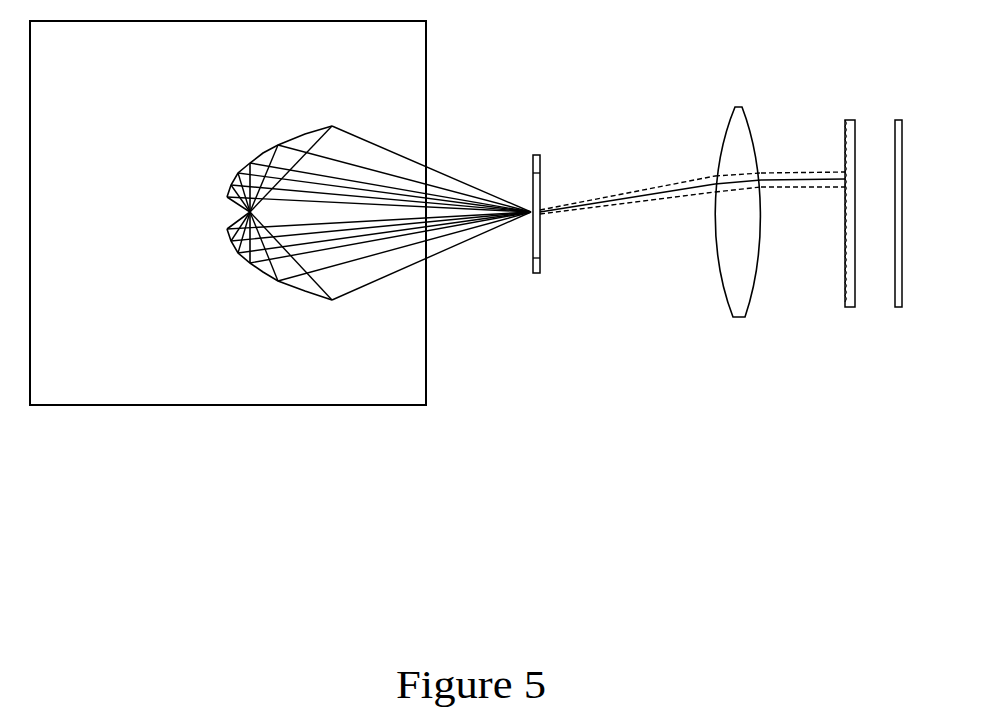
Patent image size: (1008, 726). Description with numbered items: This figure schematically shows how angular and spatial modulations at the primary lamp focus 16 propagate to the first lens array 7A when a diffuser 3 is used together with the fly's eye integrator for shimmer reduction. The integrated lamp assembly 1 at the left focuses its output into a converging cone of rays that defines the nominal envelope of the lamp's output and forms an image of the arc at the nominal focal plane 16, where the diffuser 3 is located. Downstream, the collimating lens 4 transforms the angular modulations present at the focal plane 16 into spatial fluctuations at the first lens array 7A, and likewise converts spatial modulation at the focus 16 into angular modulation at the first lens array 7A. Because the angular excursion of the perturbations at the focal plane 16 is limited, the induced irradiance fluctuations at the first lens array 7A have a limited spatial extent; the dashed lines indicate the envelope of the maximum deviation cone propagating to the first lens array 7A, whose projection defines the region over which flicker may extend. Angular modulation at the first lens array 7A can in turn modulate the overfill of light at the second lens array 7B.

The integrated lamp assembly 1 is at (260, 388).
The diffuser 3 is at (536, 273).
The collimating lens 4 is at (738, 317).
The first lens array 7A is at (848, 307).
The second lens array 7B is at (897, 307).
The primary lamp focus 16 is at (527, 224).